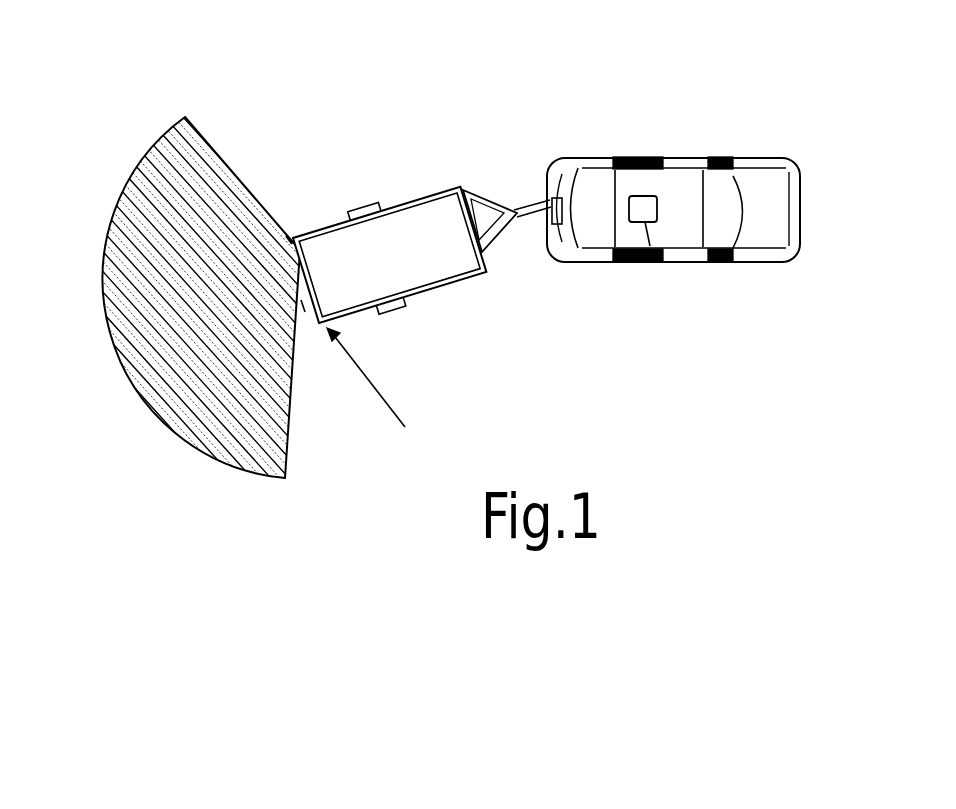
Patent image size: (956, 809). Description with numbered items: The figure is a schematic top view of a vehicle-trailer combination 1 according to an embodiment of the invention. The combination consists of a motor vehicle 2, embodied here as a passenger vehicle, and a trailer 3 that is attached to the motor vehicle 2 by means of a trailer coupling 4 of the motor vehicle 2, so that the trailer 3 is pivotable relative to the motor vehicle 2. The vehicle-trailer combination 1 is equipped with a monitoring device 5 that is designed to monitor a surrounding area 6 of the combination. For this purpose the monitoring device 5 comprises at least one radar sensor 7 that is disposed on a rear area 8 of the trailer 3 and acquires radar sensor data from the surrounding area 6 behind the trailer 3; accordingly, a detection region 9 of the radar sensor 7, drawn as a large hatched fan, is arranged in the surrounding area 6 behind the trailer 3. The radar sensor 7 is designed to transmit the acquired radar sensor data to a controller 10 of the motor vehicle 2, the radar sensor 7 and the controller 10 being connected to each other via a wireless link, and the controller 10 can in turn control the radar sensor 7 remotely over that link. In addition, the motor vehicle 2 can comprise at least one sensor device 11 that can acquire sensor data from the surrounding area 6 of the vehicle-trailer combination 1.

The vehicle-trailer combination 1 is at (615, 86).
The motor vehicle 2 is at (680, 158).
The trailer 3 is at (399, 200).
The trailer coupling 4 is at (548, 199).
The monitoring device 5 is at (375, 392).
The surrounding area 6 is at (507, 155).
The radar sensor 7 is at (302, 306).
The rear area 8 is at (289, 240).
The detection region 9 is at (122, 187).
The controller 10 is at (641, 258).
The sensor device 11 is at (577, 188).